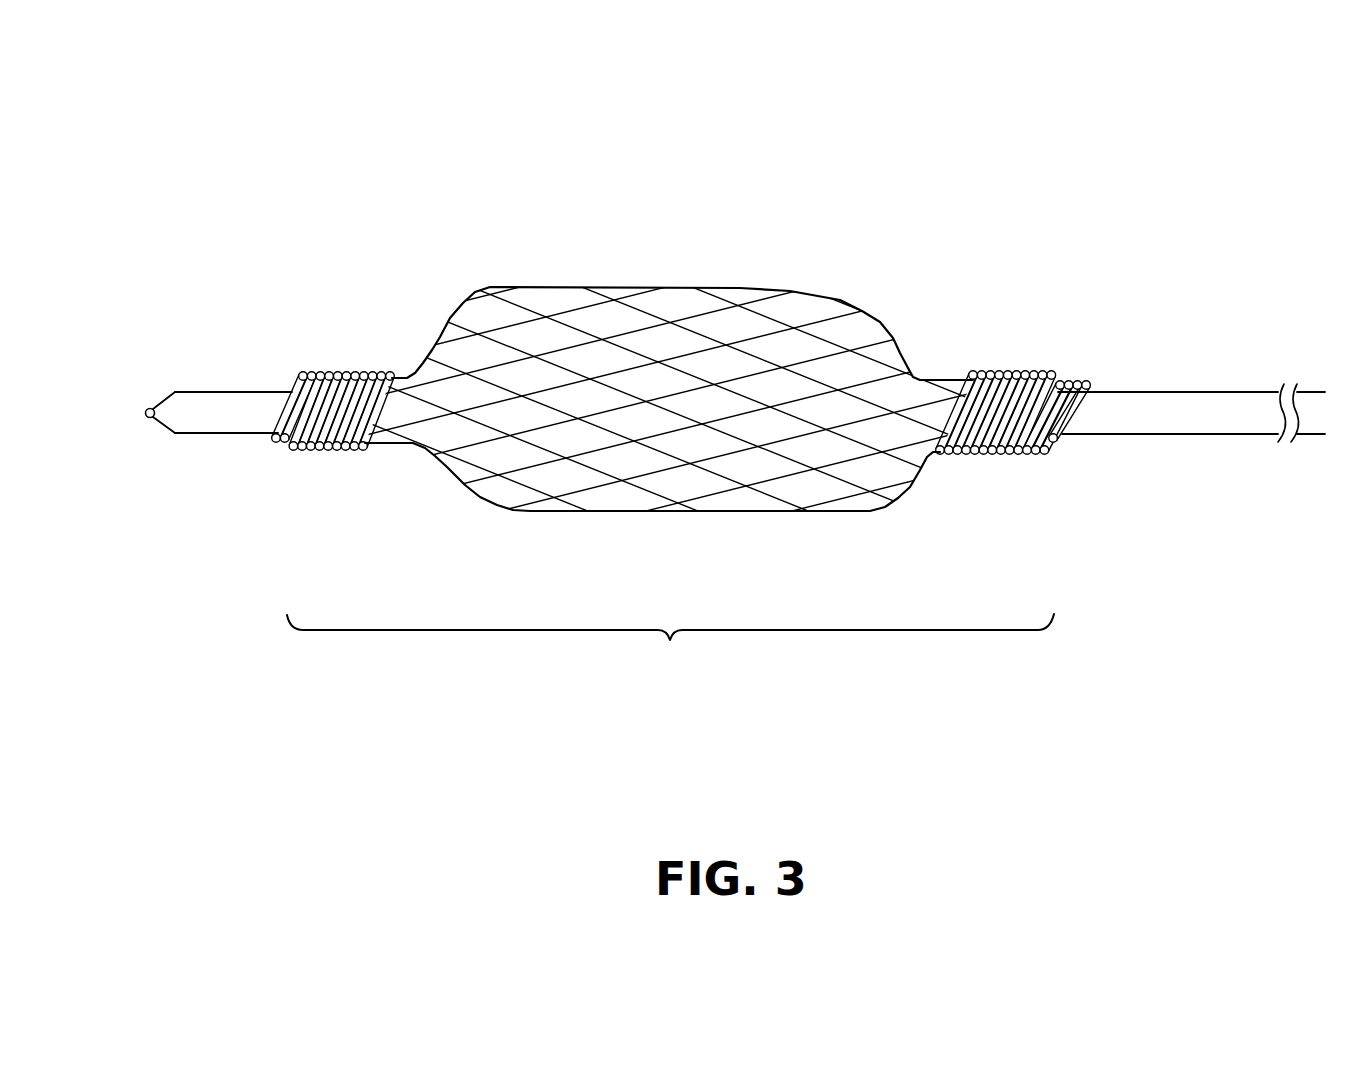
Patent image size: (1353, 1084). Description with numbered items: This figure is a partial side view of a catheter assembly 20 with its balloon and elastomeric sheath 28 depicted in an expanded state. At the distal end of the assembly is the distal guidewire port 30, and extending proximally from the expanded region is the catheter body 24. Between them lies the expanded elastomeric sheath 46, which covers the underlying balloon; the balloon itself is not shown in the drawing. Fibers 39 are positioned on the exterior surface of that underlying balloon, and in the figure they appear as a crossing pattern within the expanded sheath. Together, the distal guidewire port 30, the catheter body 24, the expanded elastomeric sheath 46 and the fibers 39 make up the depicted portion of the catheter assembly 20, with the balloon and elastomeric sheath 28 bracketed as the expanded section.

The catheter assembly 20 is at (822, 170).
The catheter body 24 is at (1153, 392).
The balloon and elastomeric sheath 28 is at (670, 636).
The distal guidewire port 30 is at (143, 417).
The fibers 39 is at (787, 323).
The expanded elastomeric sheath 46 is at (540, 287).